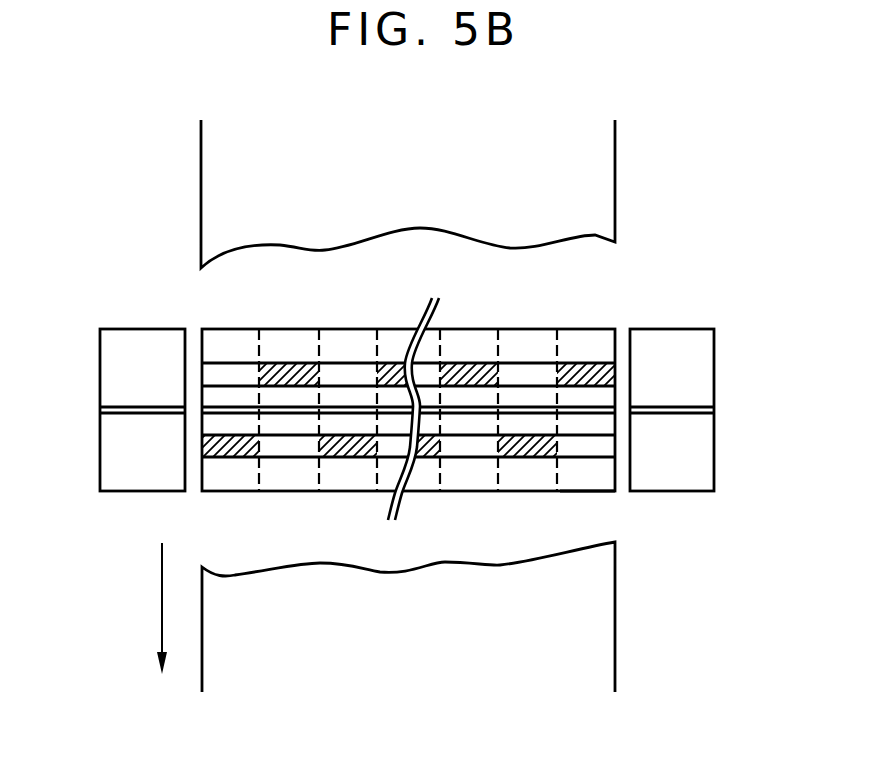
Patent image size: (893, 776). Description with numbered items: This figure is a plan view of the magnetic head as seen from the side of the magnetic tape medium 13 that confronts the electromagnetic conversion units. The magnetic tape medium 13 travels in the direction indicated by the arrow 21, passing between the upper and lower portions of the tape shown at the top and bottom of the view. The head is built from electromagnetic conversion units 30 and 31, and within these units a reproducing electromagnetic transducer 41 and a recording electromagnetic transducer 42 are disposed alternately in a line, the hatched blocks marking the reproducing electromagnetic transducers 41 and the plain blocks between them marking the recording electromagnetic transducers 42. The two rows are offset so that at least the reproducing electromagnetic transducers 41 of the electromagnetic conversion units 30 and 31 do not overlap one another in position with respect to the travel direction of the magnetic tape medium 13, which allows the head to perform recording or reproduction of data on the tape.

The magnetic tape medium 13 is at (607, 181).
The arrow 21 is at (162, 598).
The electromagnetic conversion unit 30 is at (427, 410).
The electromagnetic conversion unit 31 is at (600, 483).
The reproducing electromagnetic transducer 41 is at (576, 372).
The recording electromagnetic transducer 42 is at (353, 373).